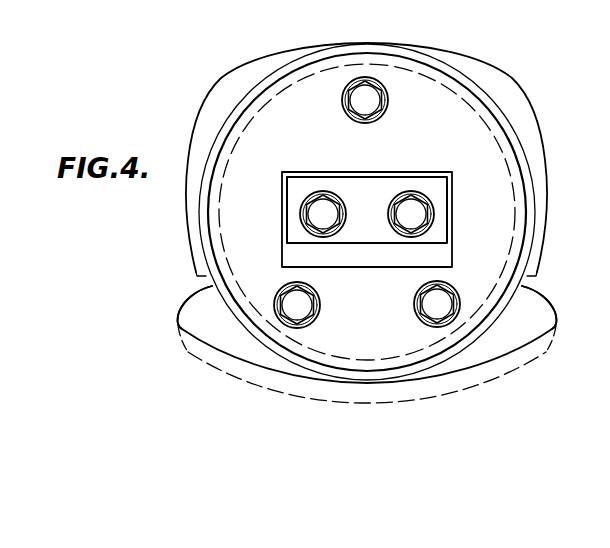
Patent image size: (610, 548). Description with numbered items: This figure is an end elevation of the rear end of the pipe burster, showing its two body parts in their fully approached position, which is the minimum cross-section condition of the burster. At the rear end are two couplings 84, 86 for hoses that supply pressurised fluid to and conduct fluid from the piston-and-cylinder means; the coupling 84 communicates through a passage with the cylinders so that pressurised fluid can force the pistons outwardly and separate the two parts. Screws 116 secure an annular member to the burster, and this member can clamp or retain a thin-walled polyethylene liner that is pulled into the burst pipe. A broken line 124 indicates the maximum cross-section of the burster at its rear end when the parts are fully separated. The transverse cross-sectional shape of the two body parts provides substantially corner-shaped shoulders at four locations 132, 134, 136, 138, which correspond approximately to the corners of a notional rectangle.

The corner-shaped shoulder location 132 is at (221, 78).
The corner-shaped shoulder location 134 is at (512, 78).
The screws 116 is at (378, 113).
The coupling 86 is at (313, 222).
The coupling 84 is at (413, 222).
The corner-shaped shoulder location 138 is at (178, 314).
The corner-shaped shoulder location 136 is at (556, 311).
The maximum cross-section of the burster 124 is at (223, 368).